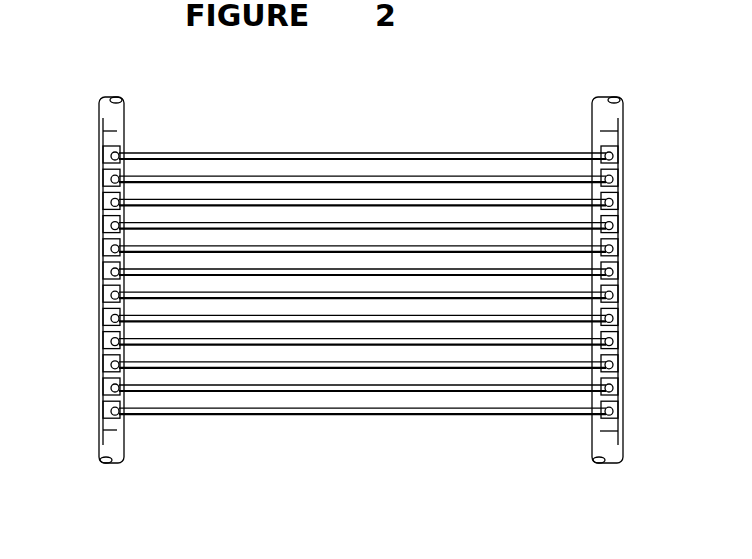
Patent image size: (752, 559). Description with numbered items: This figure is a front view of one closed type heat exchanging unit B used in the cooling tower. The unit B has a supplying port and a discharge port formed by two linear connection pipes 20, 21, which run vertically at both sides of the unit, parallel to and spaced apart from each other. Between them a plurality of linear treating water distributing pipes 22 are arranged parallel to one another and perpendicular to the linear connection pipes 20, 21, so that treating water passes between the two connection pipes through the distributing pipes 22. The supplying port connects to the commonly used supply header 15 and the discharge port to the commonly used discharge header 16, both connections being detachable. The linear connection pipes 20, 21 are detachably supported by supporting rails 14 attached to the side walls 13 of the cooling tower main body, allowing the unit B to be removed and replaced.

The side walls 13 is at (100, 378).
The supporting rails 14 is at (101, 284).
The supply header 15 is at (599, 118).
The discharge header 16 is at (121, 111).
The linear connection pipe 20 is at (617, 175).
The linear connection pipe 21 is at (98, 172).
The linear treating water distributing pipes 22 is at (412, 204).
The closed type heat exchanging unit B is at (289, 198).